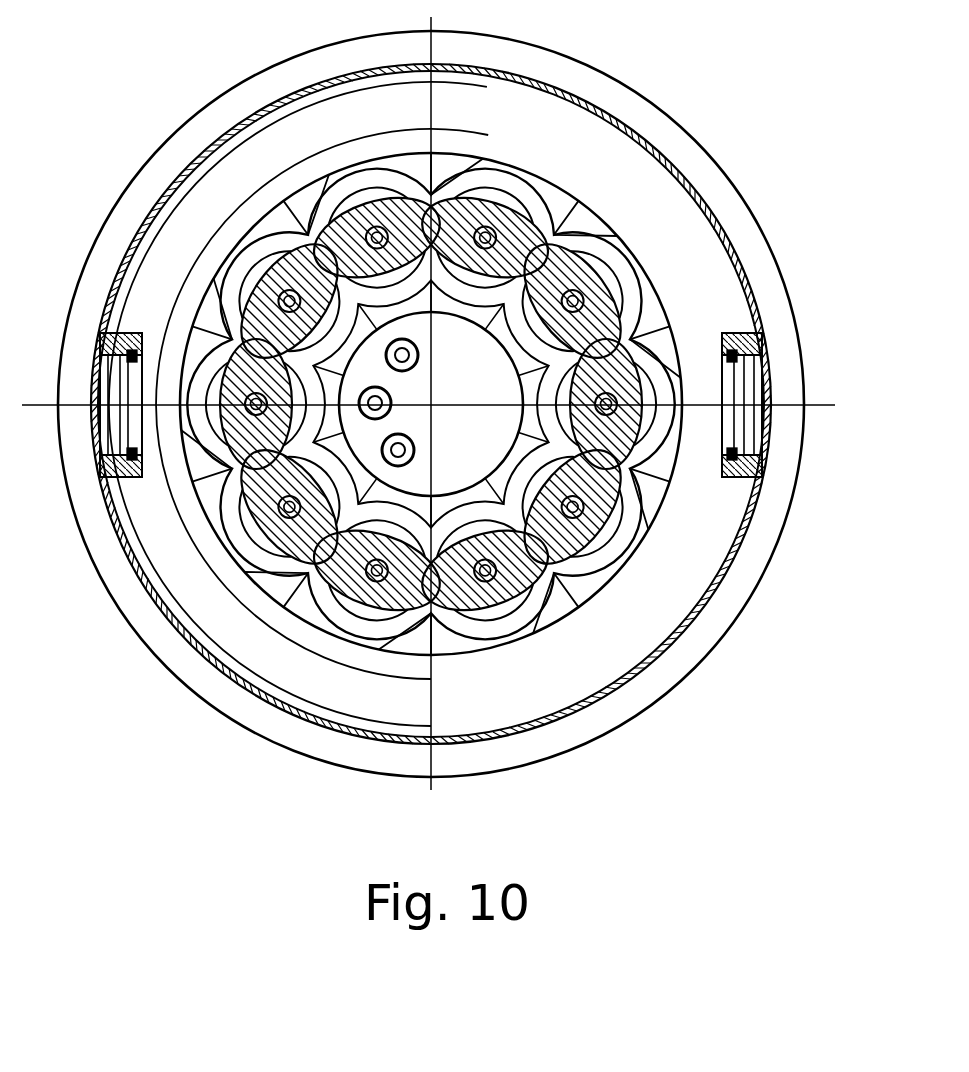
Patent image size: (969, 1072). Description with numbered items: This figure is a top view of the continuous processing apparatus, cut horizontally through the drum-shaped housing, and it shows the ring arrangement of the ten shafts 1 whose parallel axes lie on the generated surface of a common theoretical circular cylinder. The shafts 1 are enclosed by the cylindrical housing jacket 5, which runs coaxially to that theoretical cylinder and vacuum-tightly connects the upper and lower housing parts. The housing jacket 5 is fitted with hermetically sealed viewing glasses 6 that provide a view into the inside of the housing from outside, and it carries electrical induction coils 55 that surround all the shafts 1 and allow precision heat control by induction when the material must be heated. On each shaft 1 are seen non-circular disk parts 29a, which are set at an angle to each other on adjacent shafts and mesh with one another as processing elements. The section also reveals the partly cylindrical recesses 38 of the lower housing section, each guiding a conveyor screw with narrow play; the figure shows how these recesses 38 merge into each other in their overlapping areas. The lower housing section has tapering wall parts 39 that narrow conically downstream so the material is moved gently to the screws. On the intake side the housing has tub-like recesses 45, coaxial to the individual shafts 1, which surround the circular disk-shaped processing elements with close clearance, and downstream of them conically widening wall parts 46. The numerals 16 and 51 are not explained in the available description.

The shaft 1 is at (604, 457).
The housing jacket 5 is at (673, 165).
The viewing glass 6 is at (768, 428).
The hub 16 is at (501, 399).
The disk part 29a is at (560, 545).
The partly cylindrical recess 38 is at (481, 634).
The tapering wall part 39 is at (505, 475).
The tub-like recess 45 is at (347, 177).
The conically widening wall part 46 is at (288, 228).
The ring 51 is at (696, 274).
The electrical induction coil 55 is at (742, 226).